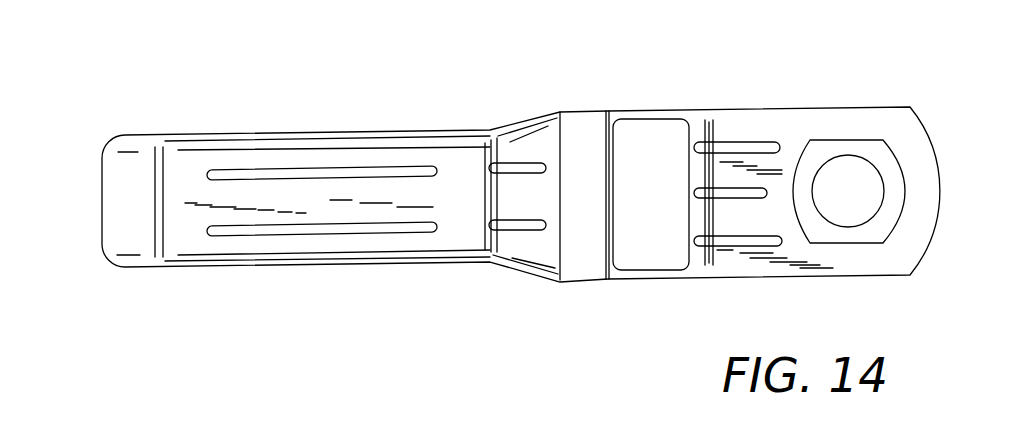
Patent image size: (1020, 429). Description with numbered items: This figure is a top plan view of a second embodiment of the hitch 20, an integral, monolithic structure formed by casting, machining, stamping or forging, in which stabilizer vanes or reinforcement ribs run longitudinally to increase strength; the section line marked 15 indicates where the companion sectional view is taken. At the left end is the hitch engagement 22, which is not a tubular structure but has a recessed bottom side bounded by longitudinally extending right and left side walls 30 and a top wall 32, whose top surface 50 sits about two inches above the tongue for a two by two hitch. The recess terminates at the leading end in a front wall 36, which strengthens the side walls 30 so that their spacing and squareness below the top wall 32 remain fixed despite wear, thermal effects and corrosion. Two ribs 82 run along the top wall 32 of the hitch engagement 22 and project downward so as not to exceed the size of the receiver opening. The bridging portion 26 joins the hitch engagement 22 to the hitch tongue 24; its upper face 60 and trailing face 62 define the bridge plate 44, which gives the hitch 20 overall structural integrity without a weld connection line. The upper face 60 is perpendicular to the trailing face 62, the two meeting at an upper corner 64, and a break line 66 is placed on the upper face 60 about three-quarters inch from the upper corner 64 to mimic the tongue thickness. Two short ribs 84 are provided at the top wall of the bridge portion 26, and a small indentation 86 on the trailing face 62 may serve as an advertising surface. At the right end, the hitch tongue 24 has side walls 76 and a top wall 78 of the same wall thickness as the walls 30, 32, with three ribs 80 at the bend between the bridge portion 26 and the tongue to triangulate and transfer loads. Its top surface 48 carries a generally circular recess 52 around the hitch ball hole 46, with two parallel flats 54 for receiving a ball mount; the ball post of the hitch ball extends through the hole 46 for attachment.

The hitch 20 is at (262, 86).
The hitch engagement 22 is at (383, 115).
The hitch tongue 24 is at (892, 95).
The bridging portion 26 is at (583, 95).
The side walls 30 is at (402, 132).
The top wall 32 is at (337, 245).
The front wall 36 is at (120, 195).
The bridge plate 44 is at (638, 273).
The hitch ball hole 46 is at (848, 182).
The top surface 48 is at (783, 128).
The top surface 50 is at (187, 192).
The recess 52 is at (887, 223).
The flats 54 is at (877, 138).
The upper face 60 is at (585, 248).
The trailing face 62 is at (680, 273).
The upper corner 64 is at (621, 118).
The break line 66 is at (557, 233).
The side walls 76 is at (780, 127).
The top wall 78 is at (732, 130).
The ribs 80 is at (757, 238).
The ribs 82 is at (440, 175).
The short ribs 84 is at (508, 163).
The indentation 86 is at (660, 118).
The section line 15- 15 is at (302, 125).